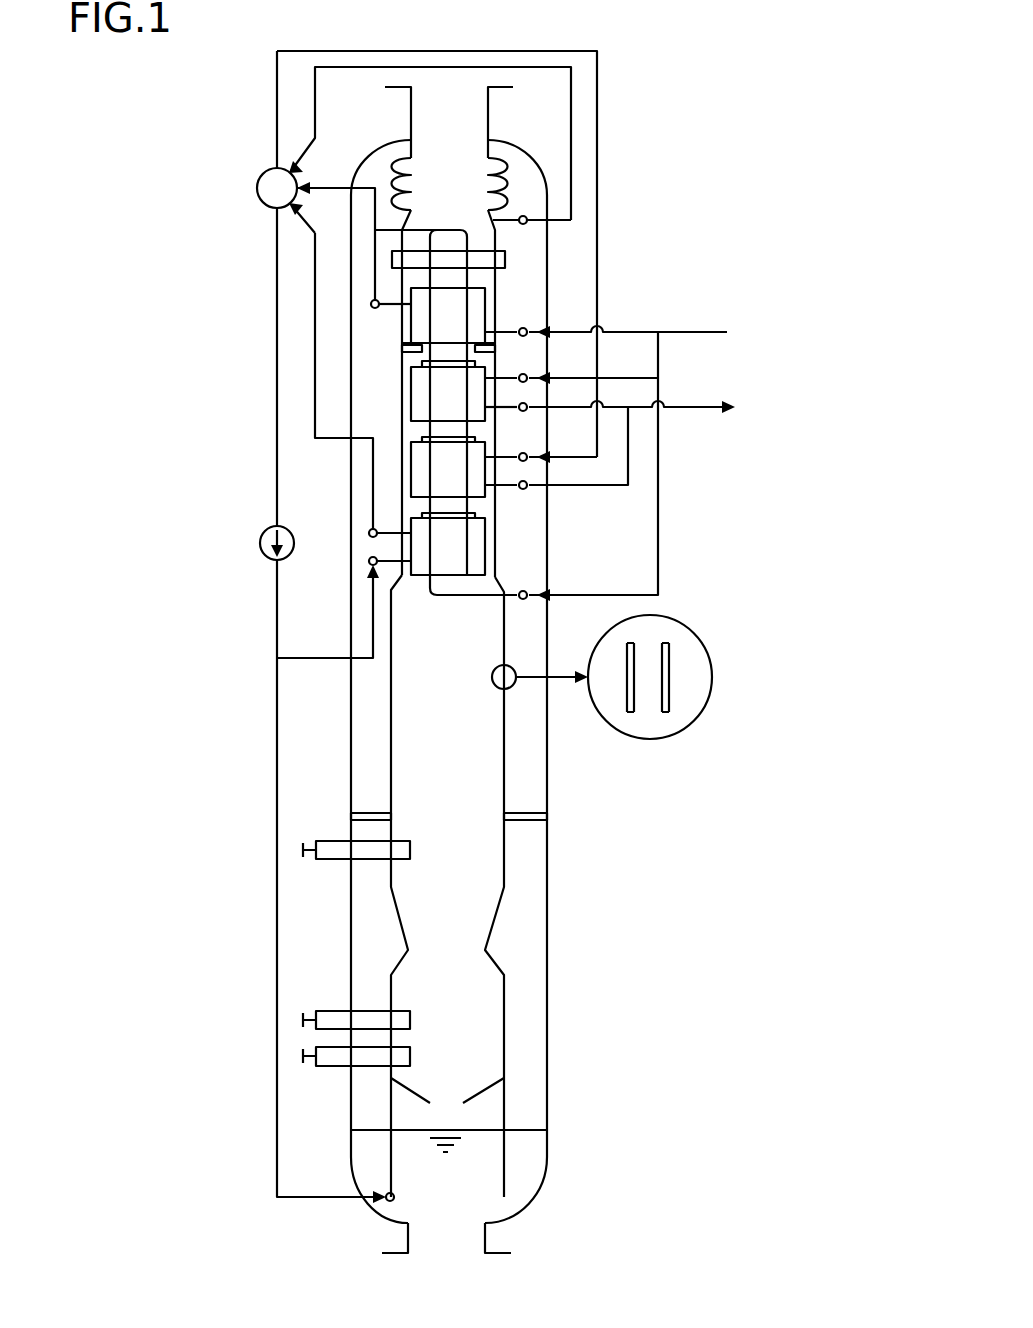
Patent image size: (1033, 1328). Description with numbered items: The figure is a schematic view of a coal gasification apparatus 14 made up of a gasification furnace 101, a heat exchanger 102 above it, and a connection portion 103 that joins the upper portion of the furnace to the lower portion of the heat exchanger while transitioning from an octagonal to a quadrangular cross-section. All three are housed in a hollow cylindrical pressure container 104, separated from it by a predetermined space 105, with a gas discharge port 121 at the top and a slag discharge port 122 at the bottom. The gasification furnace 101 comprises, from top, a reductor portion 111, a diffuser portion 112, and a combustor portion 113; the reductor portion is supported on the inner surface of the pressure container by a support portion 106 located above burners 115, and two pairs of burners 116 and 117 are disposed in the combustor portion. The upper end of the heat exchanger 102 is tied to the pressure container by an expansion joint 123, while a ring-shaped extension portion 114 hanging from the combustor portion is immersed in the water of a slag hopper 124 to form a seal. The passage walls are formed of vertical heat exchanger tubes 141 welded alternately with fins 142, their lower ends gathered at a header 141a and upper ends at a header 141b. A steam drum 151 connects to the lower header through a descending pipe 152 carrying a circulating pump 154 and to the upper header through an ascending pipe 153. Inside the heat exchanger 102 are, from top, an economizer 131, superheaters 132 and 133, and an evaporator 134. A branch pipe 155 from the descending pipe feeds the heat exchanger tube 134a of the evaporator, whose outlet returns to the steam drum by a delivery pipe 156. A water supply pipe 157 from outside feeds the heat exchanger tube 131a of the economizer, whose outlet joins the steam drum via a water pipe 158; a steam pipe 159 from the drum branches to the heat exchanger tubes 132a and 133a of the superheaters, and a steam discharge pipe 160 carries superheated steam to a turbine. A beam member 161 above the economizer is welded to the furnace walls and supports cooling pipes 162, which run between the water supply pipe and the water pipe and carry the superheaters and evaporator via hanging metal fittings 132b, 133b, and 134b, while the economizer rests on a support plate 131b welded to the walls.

The coal gasification apparatus 14 is at (771, 146).
The gasification furnace 101 is at (524, 747).
The heat exchanger 102 is at (534, 277).
The connection portion 103 is at (520, 578).
The pressure container 104 is at (561, 897).
The predetermined space 105 is at (517, 953).
The support portion 106 is at (527, 810).
The reductor portion 111 is at (468, 738).
The diffuser portion 112 is at (468, 932).
The combustor portion 113 is at (468, 1040).
The ring-shaped extension portion 114 is at (506, 1107).
The burners 115 is at (330, 841).
The burners 116 is at (330, 1011).
The burners 117 is at (328, 1066).
The gas discharge port 121 is at (442, 107).
The slag discharge port 122 is at (445, 1233).
The expansion joint 123 is at (506, 162).
The slag hopper 124 is at (542, 1190).
The economizer 131 is at (482, 308).
The heat exchanger tube of the economizer 131a is at (371, 308).
The support plate 131b is at (497, 347).
The superheater 132 is at (485, 377).
The heat exchanger tube of the superheater 132a is at (503, 412).
The hanging metal fitting 132b is at (413, 357).
The superheater 133 is at (485, 452).
The heat exchanger tube of the superheater 133a is at (503, 488).
The hanging metal fitting 133b is at (413, 437).
The evaporator 134 is at (485, 533).
The heat exchanger tube of the evaporator 134a is at (395, 565).
The hanging metal fitting 134b is at (420, 512).
The heat exchanger tubes 141 is at (388, 684).
The header 141a is at (388, 1201).
The header 141b is at (527, 216).
The fins 142 is at (647, 687).
The steam drum 151 is at (257, 186).
The descending pipe 152 is at (275, 283).
The ascending pipe 153 is at (353, 65).
The circulating pump 154 is at (260, 540).
The branch pipe 155 is at (315, 657).
The delivery pipe 156 is at (313, 387).
The water supply pipe 157 is at (727, 332).
The water pipe 158 is at (333, 186).
The steam pipe 159 is at (600, 220).
The steam discharge pipe 160 is at (735, 407).
The beam member 161 is at (392, 257).
The cooling pipes 162 is at (428, 473).